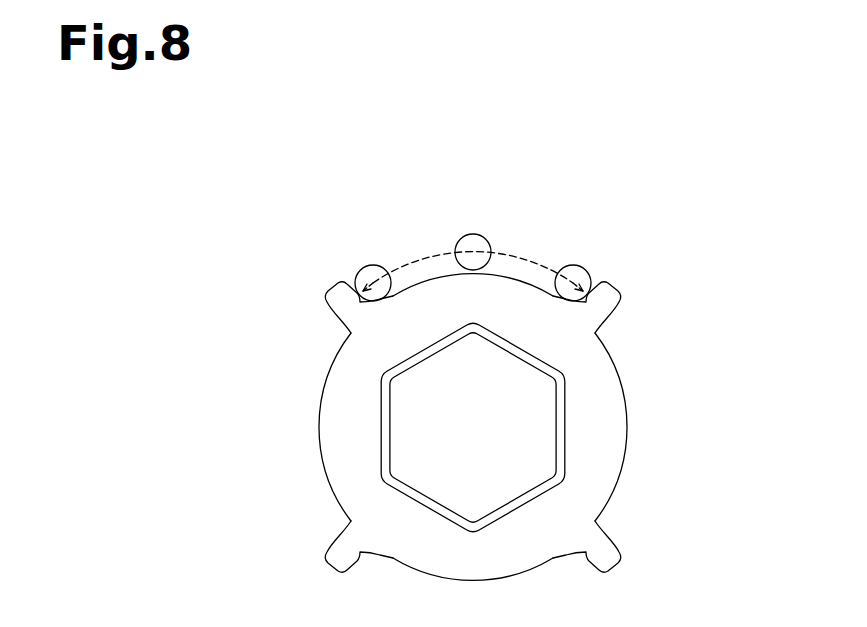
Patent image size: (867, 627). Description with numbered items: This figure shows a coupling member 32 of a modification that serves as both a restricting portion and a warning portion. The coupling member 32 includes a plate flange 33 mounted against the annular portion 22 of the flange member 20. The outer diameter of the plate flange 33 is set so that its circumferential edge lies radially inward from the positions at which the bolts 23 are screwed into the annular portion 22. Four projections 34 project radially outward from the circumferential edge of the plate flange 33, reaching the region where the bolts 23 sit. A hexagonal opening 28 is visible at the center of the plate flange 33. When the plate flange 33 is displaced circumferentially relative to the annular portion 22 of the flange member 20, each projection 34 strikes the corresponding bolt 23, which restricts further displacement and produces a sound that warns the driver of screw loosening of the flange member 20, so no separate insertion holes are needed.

The flange member 20 is at (425, 173).
The annular portion 22 is at (361, 173).
The bolts 23 is at (472, 234).
The hexagonal hole 28 is at (564, 420).
The coupling member 32 is at (319, 409).
The plate flange 33 is at (627, 416).
The projections 34 is at (333, 303).